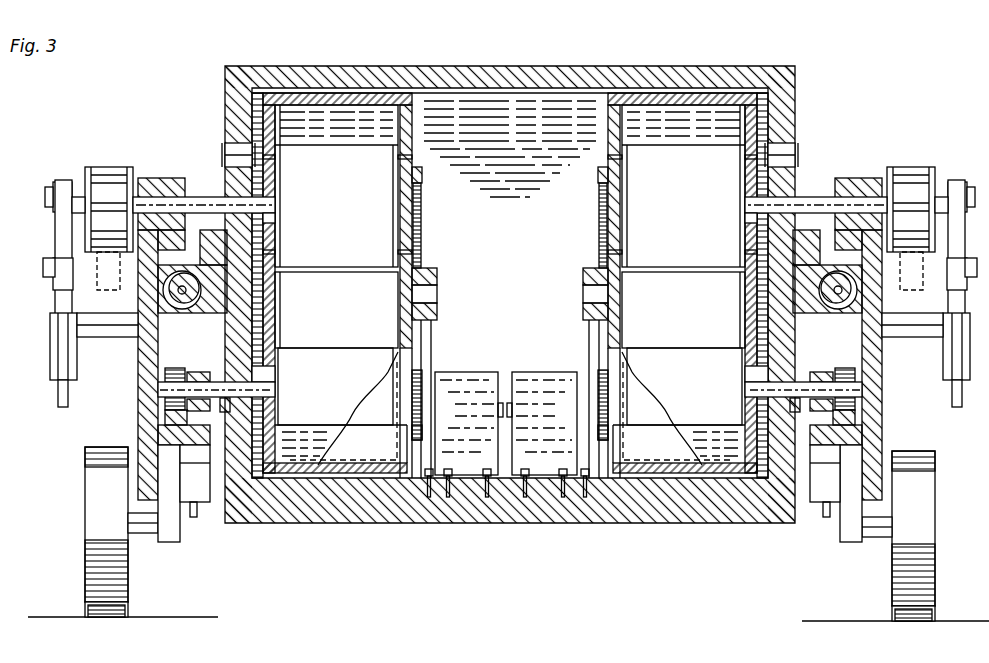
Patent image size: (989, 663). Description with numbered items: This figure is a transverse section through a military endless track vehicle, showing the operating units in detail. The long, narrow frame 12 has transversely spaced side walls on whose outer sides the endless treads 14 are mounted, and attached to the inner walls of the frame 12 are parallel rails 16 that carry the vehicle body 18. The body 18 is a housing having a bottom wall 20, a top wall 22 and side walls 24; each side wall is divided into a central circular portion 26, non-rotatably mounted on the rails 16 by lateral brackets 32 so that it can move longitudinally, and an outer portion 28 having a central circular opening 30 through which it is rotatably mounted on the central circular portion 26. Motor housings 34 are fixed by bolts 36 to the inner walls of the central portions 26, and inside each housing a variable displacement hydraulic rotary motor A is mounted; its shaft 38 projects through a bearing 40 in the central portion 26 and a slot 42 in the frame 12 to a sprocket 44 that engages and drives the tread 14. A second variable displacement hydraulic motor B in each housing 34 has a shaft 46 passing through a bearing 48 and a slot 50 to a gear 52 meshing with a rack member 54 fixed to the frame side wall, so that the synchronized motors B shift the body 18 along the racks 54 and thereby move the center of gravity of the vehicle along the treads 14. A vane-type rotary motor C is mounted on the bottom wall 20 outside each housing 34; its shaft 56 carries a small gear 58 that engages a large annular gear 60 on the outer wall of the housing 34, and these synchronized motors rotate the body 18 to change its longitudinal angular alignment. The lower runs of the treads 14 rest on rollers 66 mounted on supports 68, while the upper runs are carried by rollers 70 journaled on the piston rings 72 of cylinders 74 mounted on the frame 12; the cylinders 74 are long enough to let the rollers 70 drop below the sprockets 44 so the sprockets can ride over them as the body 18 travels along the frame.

The frame 12 is at (148, 387).
The endless treads 14 is at (103, 617).
The rails 16 is at (200, 300).
The vehicle body 18 is at (605, 59).
The bottom wall 20 is at (597, 522).
The top wall 22 is at (446, 55).
The side walls 24 is at (214, 95).
The central circular portions 26 is at (262, 190).
The outer portions 28 is at (256, 108).
The central circular openings 30 is at (222, 157).
The lateral brackets 32 is at (200, 302).
The motor housings 34 is at (416, 127).
The bolts 36 is at (232, 250).
The shafts 38 is at (277, 204).
The bearings 40 is at (278, 223).
The slots 42 is at (150, 178).
The sprockets 44 is at (98, 190).
The shafts 46 is at (282, 390).
The bearings 48 is at (255, 365).
The slots 50 is at (200, 374).
The gears 52 is at (165, 384).
The rack members 54 is at (168, 418).
The shafts 56 is at (425, 410).
The small gears 58 is at (425, 432).
The large annular gears 60 is at (424, 176).
The rollers 66 is at (97, 500).
The supports 68 is at (203, 484).
The rollers 70 is at (97, 213).
The piston rings 72 is at (62, 242).
The cylinders 74 is at (58, 352).
The variable displacement hydraulic rotary motor A is at (340, 152).
The variable displacement hydraulic motor B is at (322, 362).
The rotary motor of vane hydraulic type C is at (532, 378).